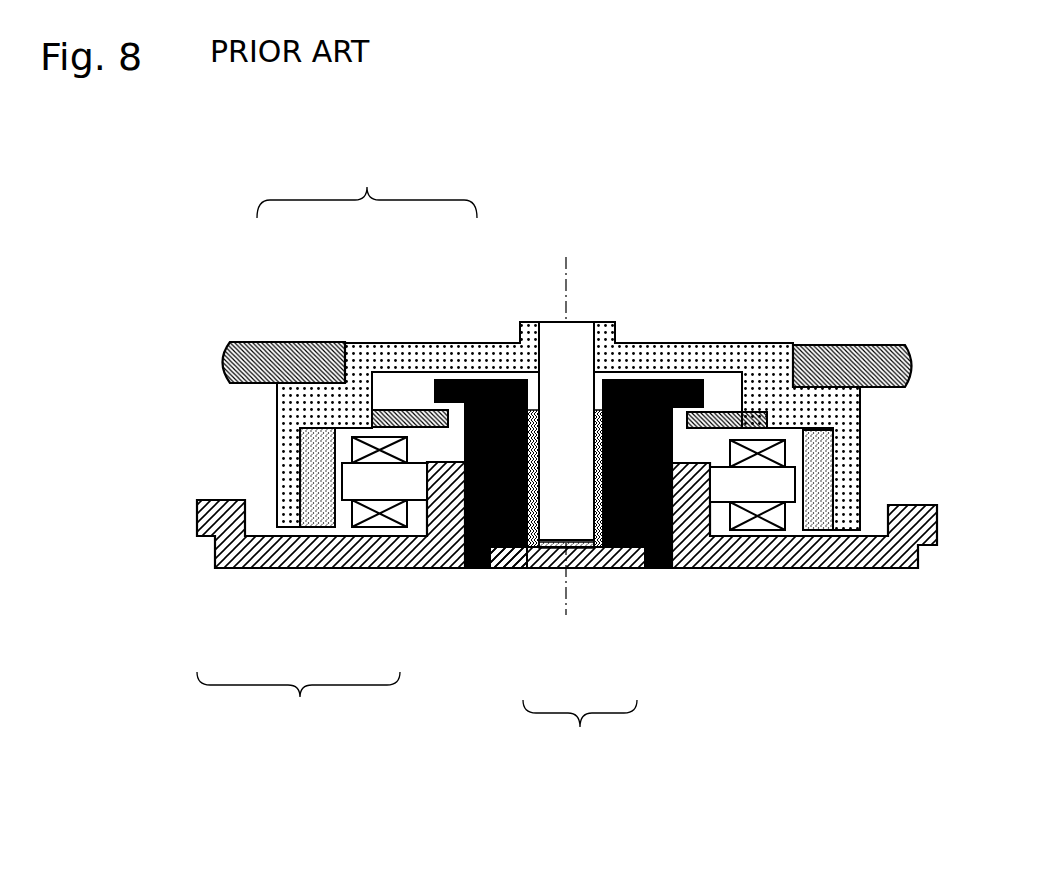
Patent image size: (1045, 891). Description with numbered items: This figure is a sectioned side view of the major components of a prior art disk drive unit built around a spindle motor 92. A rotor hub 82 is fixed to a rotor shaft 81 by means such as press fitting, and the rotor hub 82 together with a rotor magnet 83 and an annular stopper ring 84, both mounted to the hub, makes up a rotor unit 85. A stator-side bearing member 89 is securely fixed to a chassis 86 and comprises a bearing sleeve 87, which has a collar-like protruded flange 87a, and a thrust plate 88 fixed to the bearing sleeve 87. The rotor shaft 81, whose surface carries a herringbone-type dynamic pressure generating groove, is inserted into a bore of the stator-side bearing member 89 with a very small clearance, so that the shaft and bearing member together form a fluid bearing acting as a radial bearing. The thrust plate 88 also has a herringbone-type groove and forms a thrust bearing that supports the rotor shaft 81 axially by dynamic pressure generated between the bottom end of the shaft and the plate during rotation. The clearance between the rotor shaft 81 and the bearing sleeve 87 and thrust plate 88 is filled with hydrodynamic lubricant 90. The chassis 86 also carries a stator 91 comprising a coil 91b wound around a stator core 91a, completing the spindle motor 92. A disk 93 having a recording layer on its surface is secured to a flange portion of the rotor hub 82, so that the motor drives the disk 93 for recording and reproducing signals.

The rotor shaft 81 is at (578, 410).
The rotor hub 82 is at (463, 353).
The rotor magnet 83 is at (317, 483).
The annular stopper ring 84 is at (412, 408).
The rotor unit 85 is at (388, 180).
The chassis 86 is at (797, 570).
The bearing sleeve 87 is at (510, 568).
The protruded flange 87a is at (466, 563).
The thrust plate 88 is at (548, 548).
The stator-side bearing member 89 is at (600, 760).
The hydrodynamic lubricant 90 is at (673, 568).
The stator 91 is at (320, 730).
The stator core 91a is at (402, 482).
The coil 91b is at (360, 517).
The spindle motor 92 is at (723, 327).
The disk 93 is at (252, 348).